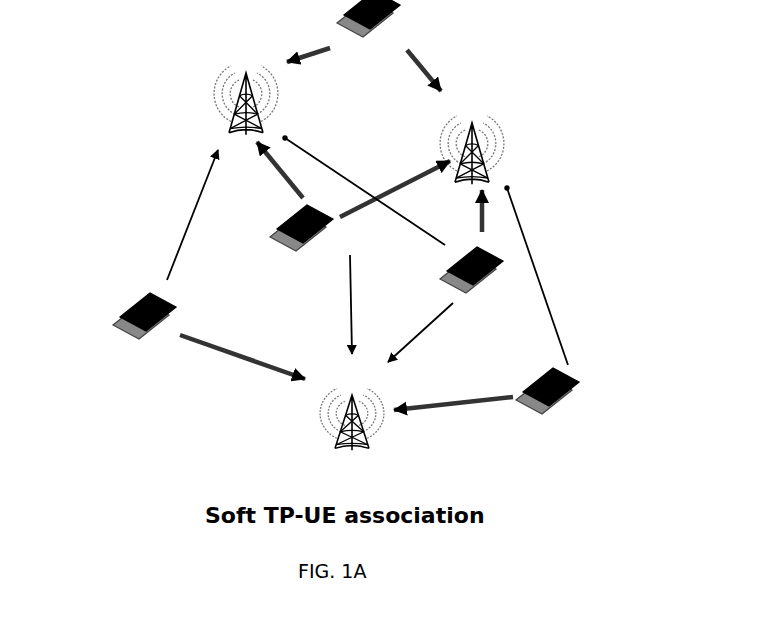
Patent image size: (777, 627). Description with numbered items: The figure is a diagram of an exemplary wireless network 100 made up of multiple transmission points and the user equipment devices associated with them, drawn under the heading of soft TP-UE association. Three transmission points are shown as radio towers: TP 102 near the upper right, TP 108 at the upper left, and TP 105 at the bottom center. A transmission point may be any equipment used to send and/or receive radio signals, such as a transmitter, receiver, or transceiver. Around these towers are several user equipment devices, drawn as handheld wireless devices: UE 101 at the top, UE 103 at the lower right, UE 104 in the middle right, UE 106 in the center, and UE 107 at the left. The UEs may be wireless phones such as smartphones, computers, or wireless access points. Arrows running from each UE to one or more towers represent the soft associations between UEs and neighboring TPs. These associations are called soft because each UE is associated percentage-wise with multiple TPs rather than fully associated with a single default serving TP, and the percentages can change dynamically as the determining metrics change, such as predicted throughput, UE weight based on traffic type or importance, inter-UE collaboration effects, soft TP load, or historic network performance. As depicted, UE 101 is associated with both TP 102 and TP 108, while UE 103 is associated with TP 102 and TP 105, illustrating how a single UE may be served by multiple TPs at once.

The wireless network 100 is at (98, 170).
The UE 101 is at (395, 29).
The TP 102 is at (485, 160).
The UE 103 is at (572, 392).
The UE 104 is at (470, 292).
The TP 105 is at (333, 417).
The UE 106 is at (290, 253).
The UE 107 is at (120, 327).
The TP 108 is at (228, 107).